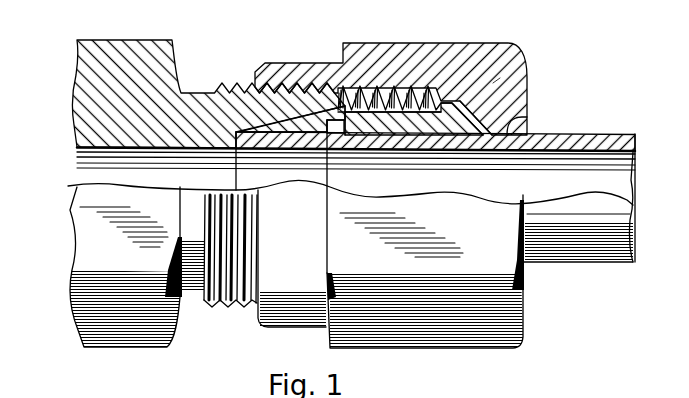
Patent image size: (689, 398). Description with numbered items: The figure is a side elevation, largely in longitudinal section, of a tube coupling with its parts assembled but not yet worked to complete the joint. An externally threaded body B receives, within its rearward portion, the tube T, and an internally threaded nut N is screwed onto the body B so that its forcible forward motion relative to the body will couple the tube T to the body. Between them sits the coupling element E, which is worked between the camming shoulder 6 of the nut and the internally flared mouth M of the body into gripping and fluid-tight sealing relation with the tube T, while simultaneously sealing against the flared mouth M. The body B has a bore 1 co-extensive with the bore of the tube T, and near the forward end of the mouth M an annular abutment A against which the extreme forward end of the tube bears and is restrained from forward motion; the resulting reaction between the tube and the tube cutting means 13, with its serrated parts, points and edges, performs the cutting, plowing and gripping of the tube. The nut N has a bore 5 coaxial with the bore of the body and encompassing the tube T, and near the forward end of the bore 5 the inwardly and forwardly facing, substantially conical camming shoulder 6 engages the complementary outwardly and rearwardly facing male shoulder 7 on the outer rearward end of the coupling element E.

The body B is at (78, 72).
The nut N is at (524, 45).
The coupling element E is at (413, 100).
The flared mouth M is at (299, 121).
The tube T is at (612, 136).
The bore 1 is at (80, 152).
The annular abutment A is at (236, 136).
The tube cutting means 13 is at (307, 133).
The bore 5 is at (527, 116).
The camming shoulder 6 is at (493, 83).
The male shoulder 7 is at (462, 103).